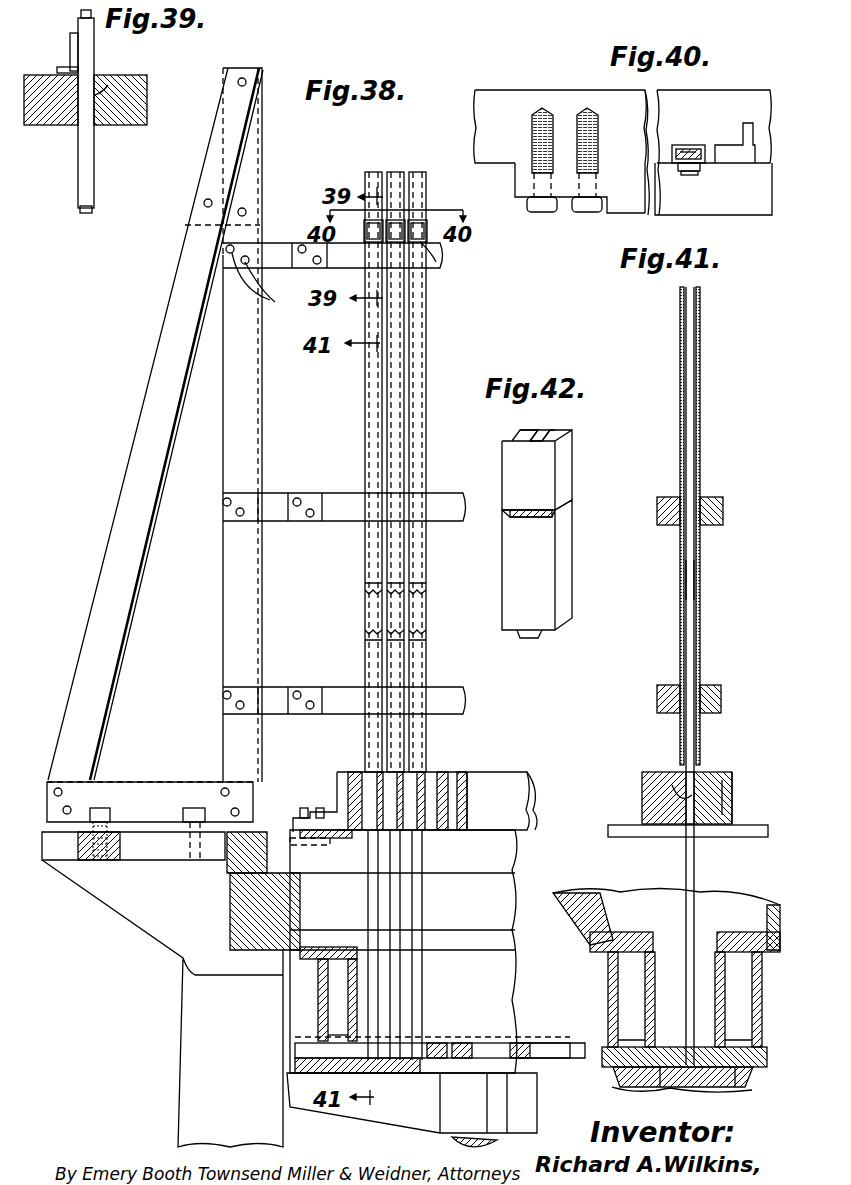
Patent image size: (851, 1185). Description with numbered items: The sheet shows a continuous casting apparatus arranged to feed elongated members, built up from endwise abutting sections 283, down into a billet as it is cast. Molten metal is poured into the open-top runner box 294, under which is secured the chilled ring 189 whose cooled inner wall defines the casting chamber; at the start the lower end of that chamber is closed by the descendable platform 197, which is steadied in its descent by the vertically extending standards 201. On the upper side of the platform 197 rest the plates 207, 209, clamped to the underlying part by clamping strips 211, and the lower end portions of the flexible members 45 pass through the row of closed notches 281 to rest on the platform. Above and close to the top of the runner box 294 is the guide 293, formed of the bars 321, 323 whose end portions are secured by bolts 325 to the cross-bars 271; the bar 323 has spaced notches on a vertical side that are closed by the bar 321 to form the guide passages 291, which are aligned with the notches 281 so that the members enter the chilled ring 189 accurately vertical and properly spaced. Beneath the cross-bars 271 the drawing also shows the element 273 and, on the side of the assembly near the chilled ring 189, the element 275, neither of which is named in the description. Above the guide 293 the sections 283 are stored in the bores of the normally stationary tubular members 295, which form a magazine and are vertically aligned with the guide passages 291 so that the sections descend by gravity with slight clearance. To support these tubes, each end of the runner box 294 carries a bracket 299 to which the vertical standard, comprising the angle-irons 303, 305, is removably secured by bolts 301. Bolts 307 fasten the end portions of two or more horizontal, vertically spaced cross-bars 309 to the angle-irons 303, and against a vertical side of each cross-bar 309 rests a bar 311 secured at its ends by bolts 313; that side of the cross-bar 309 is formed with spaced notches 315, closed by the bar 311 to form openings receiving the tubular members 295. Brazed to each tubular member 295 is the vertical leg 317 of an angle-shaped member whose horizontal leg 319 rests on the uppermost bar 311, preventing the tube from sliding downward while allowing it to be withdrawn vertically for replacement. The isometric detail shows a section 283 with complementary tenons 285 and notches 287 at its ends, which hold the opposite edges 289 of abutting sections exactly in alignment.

In FIG. 39, the flexible members 45 is at (93, 212).
In FIG. 40, the flexible members 45 is at (692, 150).
In FIG. 41, the flexible members 45 is at (685, 858).
In FIG. 38, the flexible members 45 is at (365, 603).
In FIG. 41, the chilled ring 189 is at (606, 996).
In FIG. 38, the chilled ring 189 is at (318, 1000).
In FIG. 41, the platform 197 is at (718, 1068).
In FIG. 38, the platform 197 is at (425, 1108).
In FIG. 38, the standards 201 is at (180, 1058).
In FIG. 41, the plate 207 is at (640, 1060).
In FIG. 38, the plate 207 is at (550, 1050).
In FIG. 41, the plate 209 is at (733, 1060).
In FIG. 38, the plate 209 is at (436, 1043).
In FIG. 38, the clamping strips 211 is at (300, 1062).
In FIG. 41, the cross-bars 271 is at (748, 832).
In FIG. 38, the cross-bars 271 is at (293, 824).
In FIG. 38, the plate 273 is at (305, 846).
In FIG. 38, the frame 275 is at (516, 852).
In FIG. 41, the notches 281 is at (672, 1065).
In FIG. 38, the notches 281 is at (462, 1043).
In FIG. 42, the sections 283 is at (540, 560).
In FIG. 41, the sections 283 is at (716, 612).
In FIG. 38, the sections 283 is at (400, 618).
In FIG. 42, the tenons 285 is at (520, 636).
In FIG. 42, the notches 287 is at (540, 438).
In FIG. 42, the edges 289 is at (508, 440).
In FIG. 41, the guide passages 291 is at (672, 785).
In FIG. 38, the guide passages 291 is at (470, 801).
In FIG. 41, the guide 293 is at (736, 800).
In FIG. 38, the guide 293 is at (507, 770).
In FIG. 41, the runner box 294 is at (590, 915).
In FIG. 38, the runner box 294 is at (240, 905).
In FIG. 39, the tubular members 295 is at (78, 165).
In FIG. 40, the tubular members 295 is at (684, 145).
In FIG. 41, the tubular members 295 is at (681, 388).
In FIG. 38, the tubular members 295 is at (390, 403).
In FIG. 38, the bracket 299 is at (160, 860).
In FIG. 38, the bolts 301 is at (195, 808).
In FIG. 38, the angle-iron 303 is at (223, 458).
In FIG. 38, the angle-iron 305 is at (106, 520).
In FIG. 38, the bolts 307 is at (265, 284).
In FIG. 39, the cross-bars 309 is at (117, 118).
In FIG. 40, the cross-bars 309 is at (500, 102).
In FIG. 41, the cross-bars 309 is at (715, 499).
In FIG. 38, the cross-bars 309 is at (278, 247).
In FIG. 39, the bar 311 is at (44, 120).
In FIG. 40, the bar 311 is at (742, 208).
In FIG. 41, the bar 311 is at (660, 497).
In FIG. 38, the bar 311 is at (342, 262).
In FIG. 40, the bolts 313 is at (585, 214).
In FIG. 38, the bolts 313 is at (315, 264).
In FIG. 39, the notches 315 is at (100, 92).
In FIG. 40, the notches 315 is at (745, 132).
In FIG. 39, the vertical leg 317 is at (70, 40).
In FIG. 40, the vertical leg 317 is at (700, 170).
In FIG. 38, the vertical leg 317 is at (420, 225).
In FIG. 39, the horizontal leg 319 is at (58, 68).
In FIG. 40, the horizontal leg 319 is at (690, 176).
In FIG. 38, the horizontal leg 319 is at (436, 262).
In FIG. 41, the bar 321 is at (648, 800).
In FIG. 38, the bar 321 is at (348, 772).
In FIG. 41, the bar 323 is at (725, 790).
In FIG. 38, the bar 323 is at (442, 772).
In FIG. 38, the bolts 325 is at (320, 808).